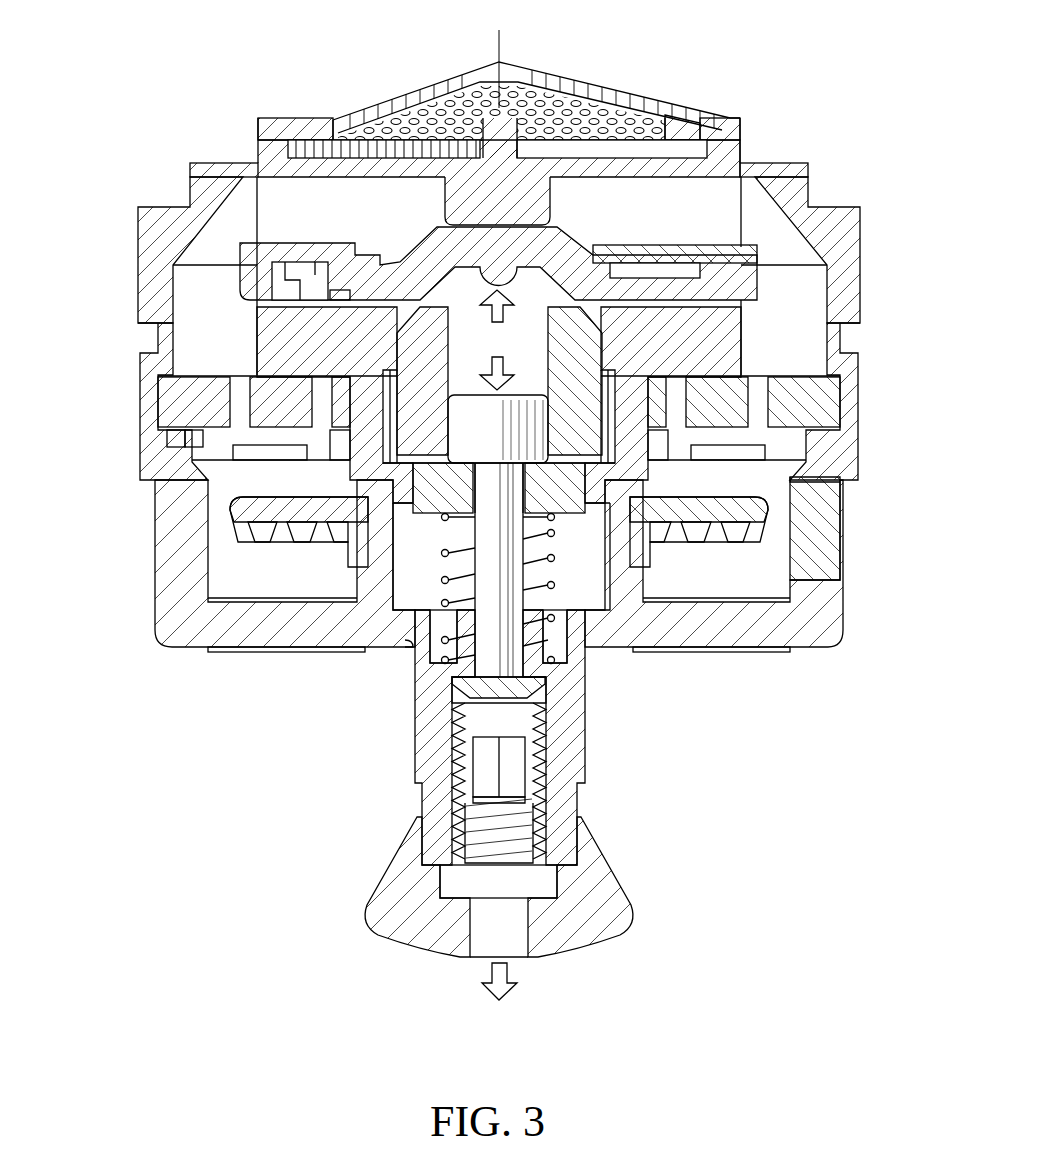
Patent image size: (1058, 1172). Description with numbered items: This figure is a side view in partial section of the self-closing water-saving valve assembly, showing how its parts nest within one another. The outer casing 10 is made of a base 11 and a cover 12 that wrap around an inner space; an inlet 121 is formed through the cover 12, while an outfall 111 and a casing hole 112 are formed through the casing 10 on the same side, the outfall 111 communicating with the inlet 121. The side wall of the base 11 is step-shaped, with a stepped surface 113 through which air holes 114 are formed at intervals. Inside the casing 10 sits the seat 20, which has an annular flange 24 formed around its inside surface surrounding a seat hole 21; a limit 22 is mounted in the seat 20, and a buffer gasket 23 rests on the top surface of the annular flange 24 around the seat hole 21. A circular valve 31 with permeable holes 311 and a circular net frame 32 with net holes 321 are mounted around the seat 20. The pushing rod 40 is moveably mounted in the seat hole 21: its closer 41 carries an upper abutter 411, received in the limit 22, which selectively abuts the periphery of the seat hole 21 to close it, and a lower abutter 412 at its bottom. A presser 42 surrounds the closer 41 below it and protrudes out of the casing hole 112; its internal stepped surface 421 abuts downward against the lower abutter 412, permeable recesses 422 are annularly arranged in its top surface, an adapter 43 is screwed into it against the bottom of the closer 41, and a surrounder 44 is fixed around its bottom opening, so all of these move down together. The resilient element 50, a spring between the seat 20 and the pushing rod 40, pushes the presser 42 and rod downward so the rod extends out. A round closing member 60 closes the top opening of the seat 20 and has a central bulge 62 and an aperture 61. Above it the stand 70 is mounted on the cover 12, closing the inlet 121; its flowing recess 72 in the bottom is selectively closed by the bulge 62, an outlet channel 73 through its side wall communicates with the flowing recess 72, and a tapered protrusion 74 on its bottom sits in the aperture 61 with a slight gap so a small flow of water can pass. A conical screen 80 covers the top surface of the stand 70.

The casing 10 is at (457, 401).
The base 11 is at (462, 589).
The outfall 111 is at (268, 652).
The casing hole 112 is at (420, 648).
The stepped surface 113 is at (168, 438).
The air holes 114 is at (197, 437).
The cover 12 is at (136, 255).
The inlet 121 is at (242, 185).
The seat 20 is at (575, 427).
The seat hole 21 is at (523, 497).
The limit 22 is at (575, 330).
The buffer gasket 23 is at (577, 480).
The annular flange 24 is at (568, 505).
The valve 31 is at (559, 405).
The permeable holes 311 is at (766, 392).
The net frame 32 is at (845, 528).
The net holes 321 is at (793, 478).
The pushing rod 40 is at (493, 731).
The closer 41 is at (540, 583).
The upper abutter 411 is at (535, 410).
The lower abutter 412 is at (525, 688).
The presser 42 is at (475, 714).
The stepped surface 421 is at (462, 688).
The permeable recesses 422 is at (418, 620).
The adapter 43 is at (540, 764).
The surrounder 44 is at (603, 878).
The resilient element 50 is at (555, 558).
The closing member 60 is at (469, 264).
The aperture 61 is at (332, 285).
The bulge 62 is at (508, 230).
The stand 70 is at (752, 138).
The flowing recess 72 is at (592, 246).
The outlet channel 73 is at (760, 194).
The protrusion 74 is at (343, 305).
The conical screen 80 is at (600, 83).